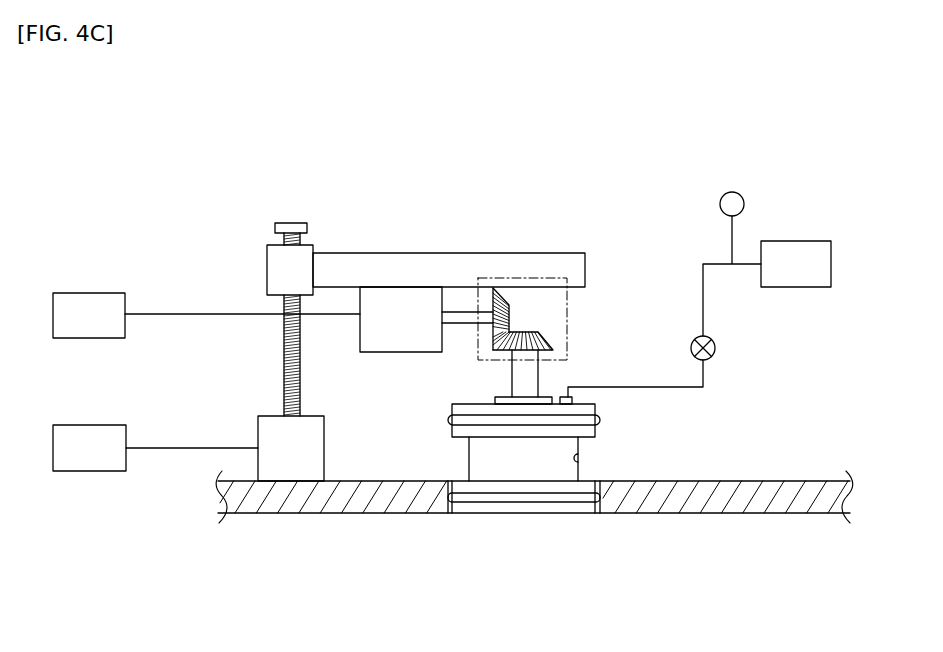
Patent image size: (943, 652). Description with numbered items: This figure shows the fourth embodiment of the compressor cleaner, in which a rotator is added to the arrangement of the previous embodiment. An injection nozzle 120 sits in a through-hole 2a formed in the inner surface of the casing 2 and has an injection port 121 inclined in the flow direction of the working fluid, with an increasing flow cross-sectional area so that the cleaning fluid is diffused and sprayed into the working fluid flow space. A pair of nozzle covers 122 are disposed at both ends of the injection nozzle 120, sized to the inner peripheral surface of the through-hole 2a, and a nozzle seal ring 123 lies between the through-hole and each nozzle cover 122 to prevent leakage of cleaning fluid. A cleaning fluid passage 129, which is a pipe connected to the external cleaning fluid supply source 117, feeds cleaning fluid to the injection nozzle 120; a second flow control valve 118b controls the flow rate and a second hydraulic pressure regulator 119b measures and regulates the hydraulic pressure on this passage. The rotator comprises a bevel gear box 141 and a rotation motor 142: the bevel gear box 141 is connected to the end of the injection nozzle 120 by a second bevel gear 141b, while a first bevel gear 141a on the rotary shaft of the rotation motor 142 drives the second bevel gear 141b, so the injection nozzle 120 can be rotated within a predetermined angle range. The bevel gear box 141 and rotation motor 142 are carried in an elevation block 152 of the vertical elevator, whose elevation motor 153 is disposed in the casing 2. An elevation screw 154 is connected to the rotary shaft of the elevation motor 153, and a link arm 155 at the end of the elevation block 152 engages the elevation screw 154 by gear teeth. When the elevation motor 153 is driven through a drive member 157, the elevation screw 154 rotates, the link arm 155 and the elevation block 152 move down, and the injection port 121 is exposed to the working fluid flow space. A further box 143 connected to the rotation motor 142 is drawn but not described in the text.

The casing 2 is at (328, 500).
The through-hole 2a is at (447, 505).
The external cleaning fluid supply source 117 is at (795, 241).
The second flow control valve 118b is at (716, 347).
The second hydraulic pressure regulator 119b is at (732, 192).
The injection nozzle 120 is at (520, 460).
The injection port 121 is at (580, 458).
The nozzle cover 122 is at (462, 404).
The nozzle seal ring 123 is at (450, 420).
The cleaning fluid passage 129 is at (705, 370).
The bevel gear box 141 is at (567, 303).
The first bevel gear 141a is at (508, 313).
The second bevel gear 141b is at (552, 342).
The rotation motor 142 is at (388, 338).
The rotation driver controller 143 is at (86, 293).
The elevation block 152 is at (450, 252).
The elevation motor 153 is at (280, 465).
The elevation screw 154 is at (283, 311).
The link arm 155 is at (267, 270).
The drive member 157 is at (88, 471).